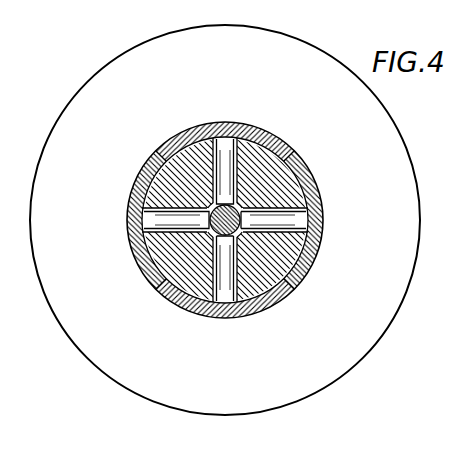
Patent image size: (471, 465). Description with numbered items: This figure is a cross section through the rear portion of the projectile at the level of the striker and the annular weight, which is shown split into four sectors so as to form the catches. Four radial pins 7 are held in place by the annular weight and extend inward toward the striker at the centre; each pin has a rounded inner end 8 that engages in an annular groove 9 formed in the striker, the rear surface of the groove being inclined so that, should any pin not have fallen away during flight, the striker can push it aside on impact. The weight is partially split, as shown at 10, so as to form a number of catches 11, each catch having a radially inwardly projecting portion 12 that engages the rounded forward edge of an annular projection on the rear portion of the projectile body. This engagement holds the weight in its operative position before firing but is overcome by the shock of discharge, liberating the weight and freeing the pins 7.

The radial pins 7 is at (211, 140).
The rounded inner end 8 is at (202, 143).
The annular groove 9 is at (238, 207).
The split 10 is at (160, 152).
The catches 11 is at (225, 137).
The radially inwardly projecting portion 12 is at (231, 140).